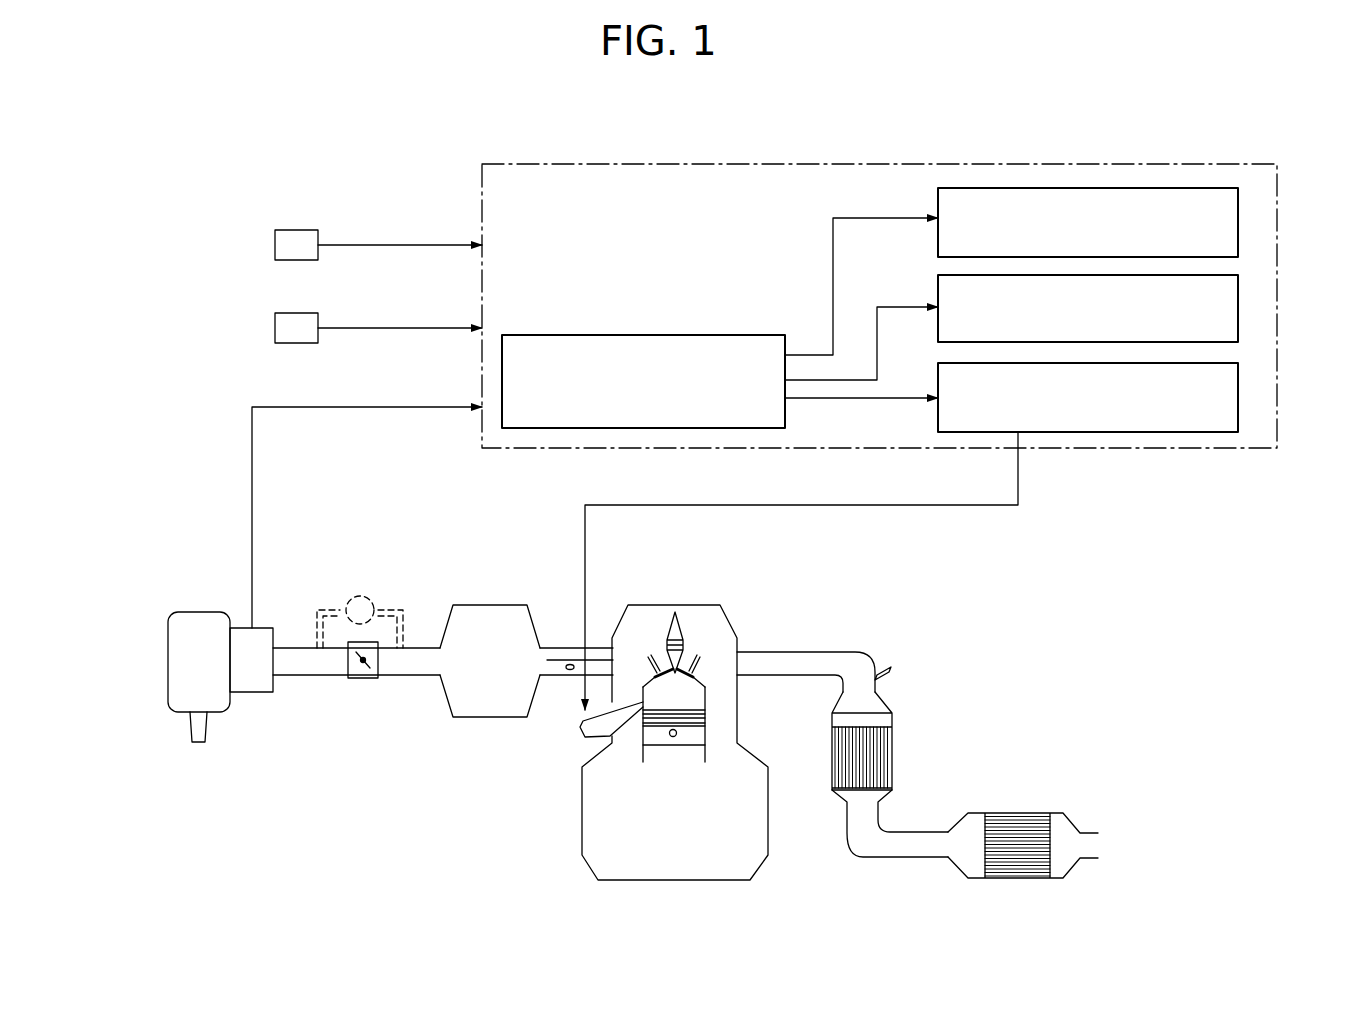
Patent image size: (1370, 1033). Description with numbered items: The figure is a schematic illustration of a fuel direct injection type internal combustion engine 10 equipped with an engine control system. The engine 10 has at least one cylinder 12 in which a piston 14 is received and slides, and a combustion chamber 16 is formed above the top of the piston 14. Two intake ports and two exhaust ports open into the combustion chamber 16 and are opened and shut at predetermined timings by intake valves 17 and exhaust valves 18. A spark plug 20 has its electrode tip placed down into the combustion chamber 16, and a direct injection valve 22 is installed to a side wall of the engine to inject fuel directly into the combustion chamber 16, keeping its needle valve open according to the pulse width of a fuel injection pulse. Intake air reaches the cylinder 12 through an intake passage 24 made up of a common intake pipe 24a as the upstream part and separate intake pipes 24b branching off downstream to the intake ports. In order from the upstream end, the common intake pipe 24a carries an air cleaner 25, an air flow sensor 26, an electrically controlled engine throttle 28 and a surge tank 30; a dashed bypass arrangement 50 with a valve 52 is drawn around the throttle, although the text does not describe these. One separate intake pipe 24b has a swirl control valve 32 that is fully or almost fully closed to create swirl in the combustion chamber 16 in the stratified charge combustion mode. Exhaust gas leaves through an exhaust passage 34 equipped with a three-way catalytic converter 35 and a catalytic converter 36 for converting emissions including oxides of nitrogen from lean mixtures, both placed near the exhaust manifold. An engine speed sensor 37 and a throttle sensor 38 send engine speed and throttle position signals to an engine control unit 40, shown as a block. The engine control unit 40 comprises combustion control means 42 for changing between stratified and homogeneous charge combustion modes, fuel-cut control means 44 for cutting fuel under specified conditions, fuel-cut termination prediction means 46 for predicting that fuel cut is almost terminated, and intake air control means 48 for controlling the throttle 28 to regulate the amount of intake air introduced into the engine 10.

The internal combustion engine 10 is at (582, 792).
The cylinder 12 is at (707, 758).
The piston 14 is at (700, 733).
The combustion chamber 16 is at (693, 698).
The intake valves 17 is at (658, 677).
The exhaust valves 18 is at (708, 680).
The spark plug 20 is at (686, 648).
The direct injection valve 22 is at (580, 718).
The intake passage 24 is at (305, 675).
The common intake pipe 24a is at (408, 678).
The separate intake pipes 24b is at (558, 648).
The air cleaner 25 is at (190, 612).
The air flow sensor 26 is at (257, 692).
The electrically controlled engine throttle 28 is at (355, 678).
The surge tank 30 is at (498, 605).
The swirl control valve 32 is at (562, 676).
The exhaust passage 34 is at (834, 652).
The three-way catalytic converter 35 is at (892, 752).
The catalytic converter 36 is at (998, 813).
The engine speed sensor 37 is at (275, 242).
The throttle sensor 38 is at (275, 333).
The engine control unit 40 is at (1187, 165).
The combustion control means 42 is at (1240, 394).
The fuel-cut control means 44 is at (1240, 306).
The fuel-cut termination prediction means 46 is at (568, 428).
The intake air control means 48 is at (1240, 226).
The bypass passage 50 is at (335, 603).
The bypass valve 52 is at (375, 598).